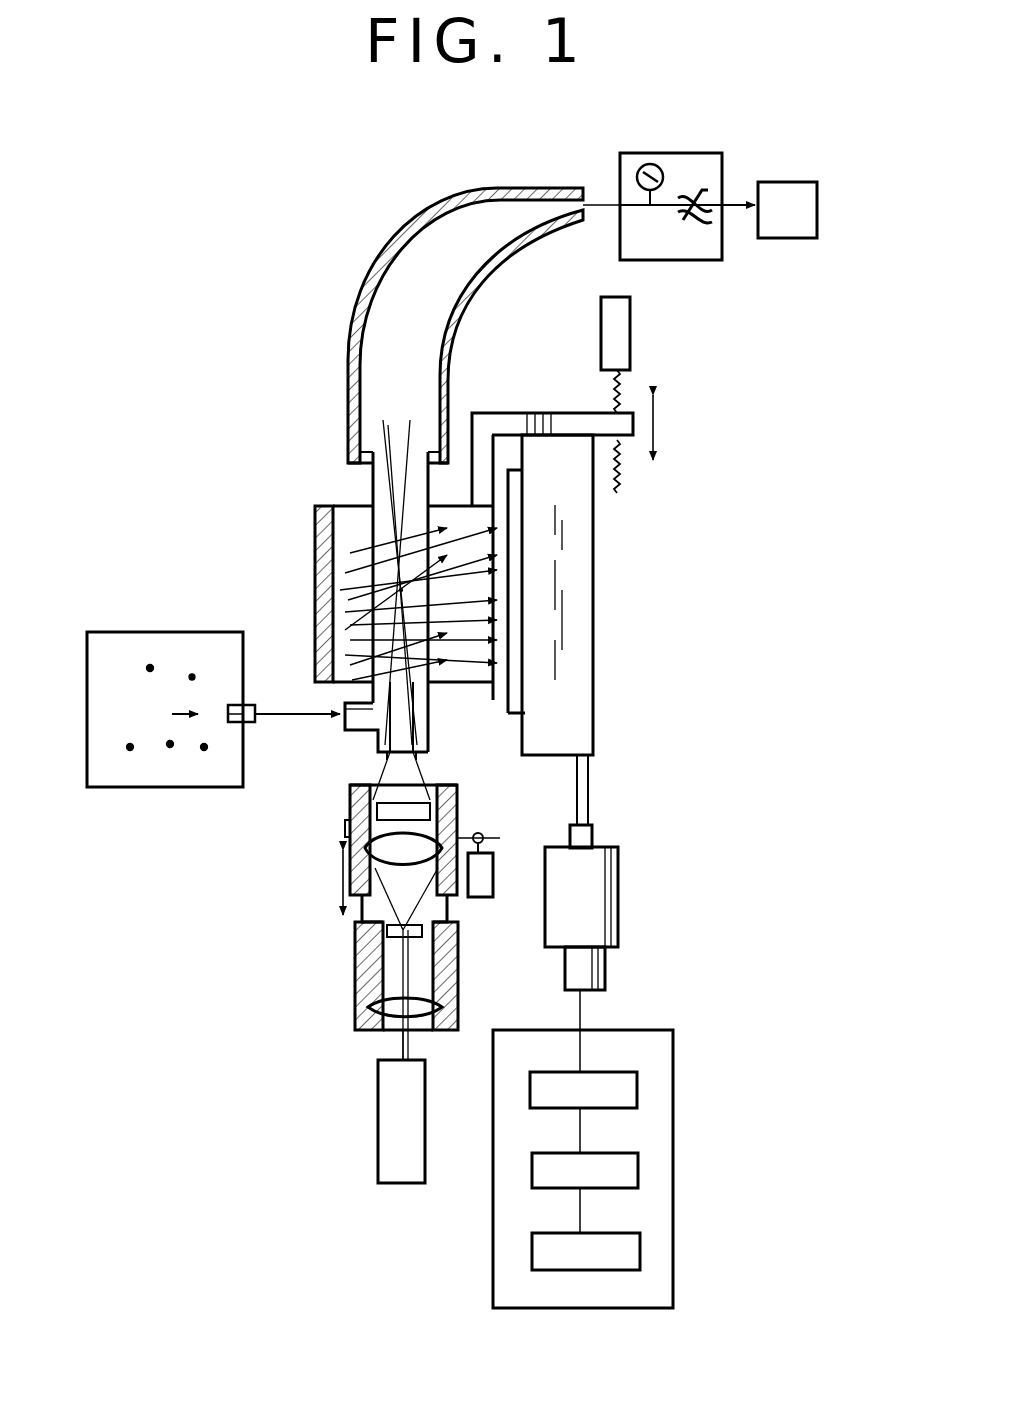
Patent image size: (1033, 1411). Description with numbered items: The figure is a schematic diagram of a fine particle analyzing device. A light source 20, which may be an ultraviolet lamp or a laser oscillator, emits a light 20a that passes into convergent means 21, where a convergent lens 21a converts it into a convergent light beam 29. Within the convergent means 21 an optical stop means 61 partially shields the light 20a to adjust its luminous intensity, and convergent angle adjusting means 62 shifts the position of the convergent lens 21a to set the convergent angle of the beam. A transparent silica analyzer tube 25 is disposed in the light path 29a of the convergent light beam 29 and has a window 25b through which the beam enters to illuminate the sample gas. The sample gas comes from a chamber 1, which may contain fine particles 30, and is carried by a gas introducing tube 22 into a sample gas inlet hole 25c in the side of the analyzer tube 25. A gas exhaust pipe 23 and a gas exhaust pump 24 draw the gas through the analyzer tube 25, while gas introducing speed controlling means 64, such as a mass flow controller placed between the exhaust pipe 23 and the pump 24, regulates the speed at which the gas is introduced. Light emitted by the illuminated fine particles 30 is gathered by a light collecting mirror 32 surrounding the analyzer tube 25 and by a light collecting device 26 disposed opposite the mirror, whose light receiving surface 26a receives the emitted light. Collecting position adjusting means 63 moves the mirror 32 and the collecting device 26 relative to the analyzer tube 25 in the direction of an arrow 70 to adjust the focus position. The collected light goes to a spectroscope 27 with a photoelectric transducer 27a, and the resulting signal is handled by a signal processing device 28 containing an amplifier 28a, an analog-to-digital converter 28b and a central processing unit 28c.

The chamber 1 is at (172, 788).
The light source 20 is at (378, 1112).
The light 20a is at (402, 1048).
The convergent means 21 is at (460, 957).
The convergent lens 21a is at (440, 840).
The gas introducing tube 22 is at (340, 713).
The gas exhaust pipe 23 is at (350, 352).
The gas exhaust pump 24 is at (787, 238).
The analyzer tube 25 is at (362, 745).
The window 25b is at (380, 763).
The sample gas inlet hole 25c is at (343, 710).
The light collecting device 26 is at (596, 670).
The light receiving surface 26a is at (510, 700).
The spectroscope 27 is at (692, 886).
The photoelectric transducer 27a is at (605, 963).
The signal processing device 28 is at (673, 1090).
The amplifier 28a is at (590, 1072).
The analog-to-digital converter 28b is at (600, 1153).
The central processing unit 28c is at (596, 1233).
The convergent light beam 29 is at (420, 758).
The light path 29a is at (415, 757).
The fine particles 30 is at (150, 665).
The light collecting mirror 32 is at (318, 560).
The optical stop means 61 is at (355, 792).
The convergent angle adjusting means 62 is at (482, 873).
The collecting position adjusting means 63 is at (600, 330).
The gas introducing speed controlling means 64 is at (688, 260).
The arrow 70 is at (656, 432).